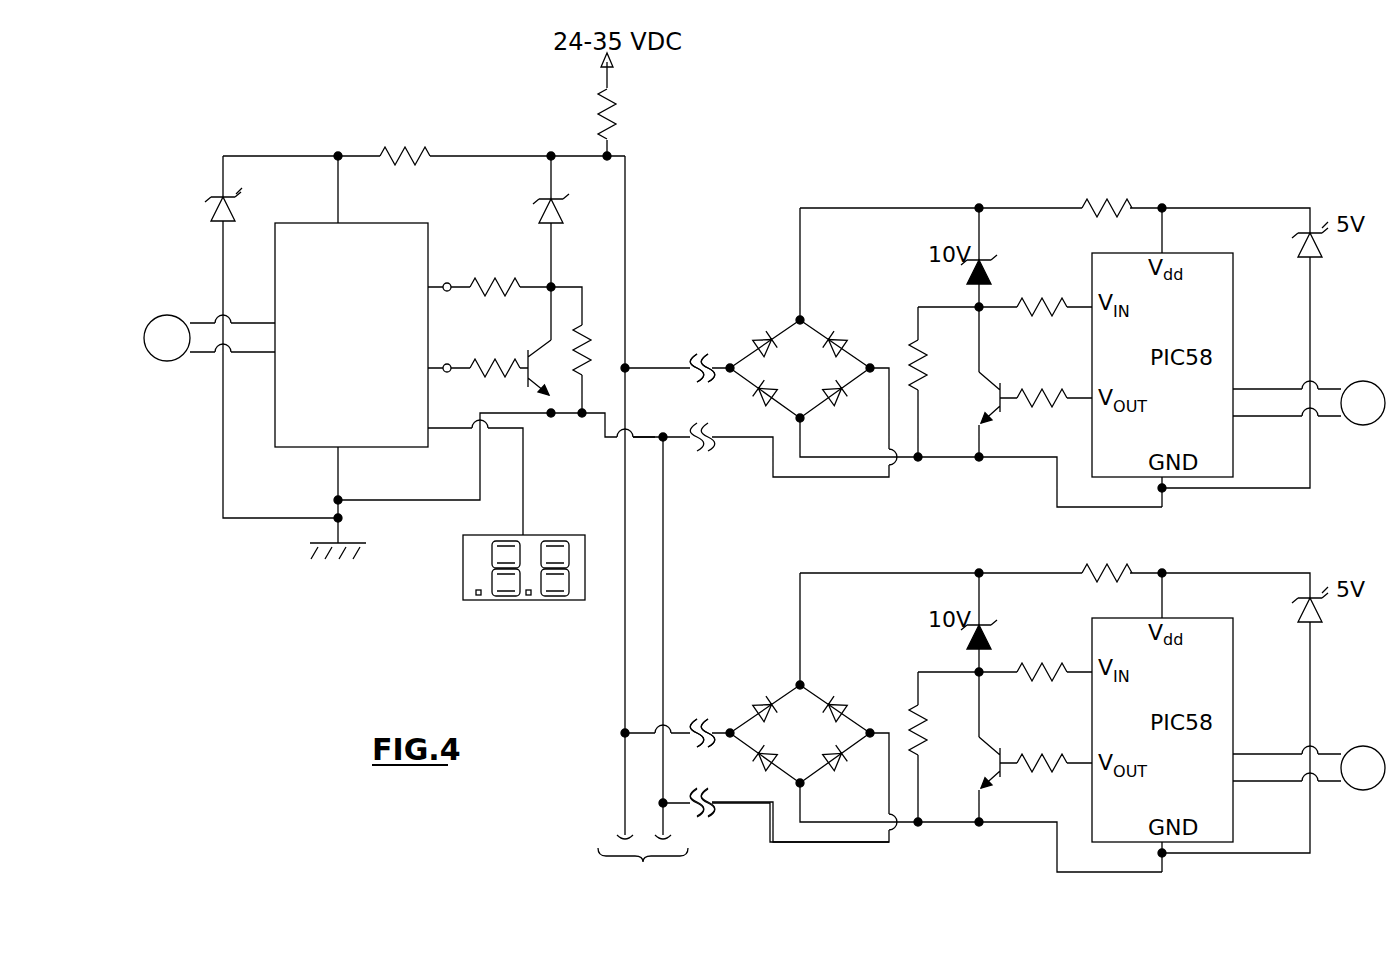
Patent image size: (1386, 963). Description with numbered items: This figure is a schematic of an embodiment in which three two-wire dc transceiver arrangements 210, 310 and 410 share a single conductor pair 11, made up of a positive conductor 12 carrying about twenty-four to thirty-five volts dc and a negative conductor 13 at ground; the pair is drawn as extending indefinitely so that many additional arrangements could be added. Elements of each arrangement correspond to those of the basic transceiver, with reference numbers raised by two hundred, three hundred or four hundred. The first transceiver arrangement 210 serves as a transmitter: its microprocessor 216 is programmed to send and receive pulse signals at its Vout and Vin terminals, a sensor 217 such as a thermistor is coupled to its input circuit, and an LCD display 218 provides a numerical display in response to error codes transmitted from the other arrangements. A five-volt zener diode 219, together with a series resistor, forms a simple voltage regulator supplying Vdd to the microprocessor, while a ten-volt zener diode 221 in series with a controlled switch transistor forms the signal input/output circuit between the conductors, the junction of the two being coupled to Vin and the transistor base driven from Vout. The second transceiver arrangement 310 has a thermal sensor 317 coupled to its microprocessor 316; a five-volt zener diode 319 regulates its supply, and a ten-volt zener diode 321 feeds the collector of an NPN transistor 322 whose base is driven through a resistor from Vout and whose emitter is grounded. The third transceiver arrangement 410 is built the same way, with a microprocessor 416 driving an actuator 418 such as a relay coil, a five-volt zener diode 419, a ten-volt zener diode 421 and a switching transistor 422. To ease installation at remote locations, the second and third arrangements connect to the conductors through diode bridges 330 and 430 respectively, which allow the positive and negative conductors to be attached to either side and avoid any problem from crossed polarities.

The conductor pair 11 is at (643, 869).
The positive conductor 12 is at (625, 223).
The negative conductor 13 is at (622, 442).
The first transceiver arrangement 210 is at (263, 602).
The microprocessor 216 is at (403, 223).
The sensor 217 is at (166, 361).
The LCD display 218 is at (520, 600).
The zener diode 219 is at (212, 227).
The zener diode 221 is at (545, 224).
The second transceiver arrangement 310 is at (1016, 500).
The microprocessor 316 is at (1190, 253).
The thermal sensor 317 is at (1374, 381).
The zener diode 319 is at (1300, 250).
The zener diode 321 is at (990, 275).
The transistor 322 is at (1005, 410).
The diode bridge 330 is at (782, 338).
The third transceiver arrangement 410 is at (1016, 865).
The microprocessor 416 is at (1190, 618).
The actuator 418 is at (1374, 746).
The zener diode 419 is at (1300, 615).
The zener diode 421 is at (990, 640).
The transistor 422 is at (1005, 775).
The diode bridge 430 is at (782, 703).